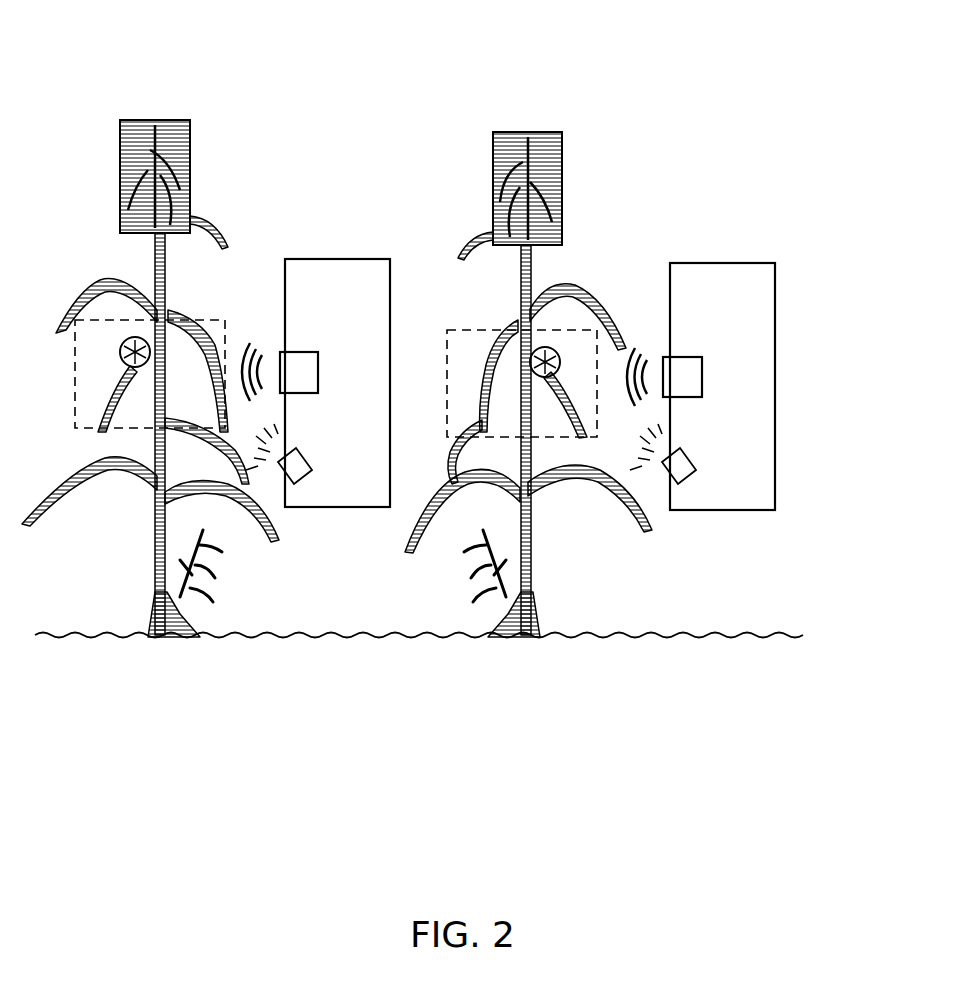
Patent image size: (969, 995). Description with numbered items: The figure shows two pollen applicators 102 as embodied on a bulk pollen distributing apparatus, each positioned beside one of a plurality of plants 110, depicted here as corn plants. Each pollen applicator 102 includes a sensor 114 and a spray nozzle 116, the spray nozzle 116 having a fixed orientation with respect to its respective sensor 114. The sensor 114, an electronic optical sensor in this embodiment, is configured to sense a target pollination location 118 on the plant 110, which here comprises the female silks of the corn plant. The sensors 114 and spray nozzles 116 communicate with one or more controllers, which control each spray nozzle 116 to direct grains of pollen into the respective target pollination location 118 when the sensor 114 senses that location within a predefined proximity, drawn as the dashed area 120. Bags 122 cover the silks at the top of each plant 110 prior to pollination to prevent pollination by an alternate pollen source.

The pollen applicator 102 is at (750, 320).
The plant 110 is at (580, 248).
The sensor 114 is at (681, 377).
The spray nozzle 116 is at (690, 467).
The target pollination location 118 is at (552, 340).
The area of predefined proximity 120 is at (467, 328).
The bag 122 is at (550, 155).